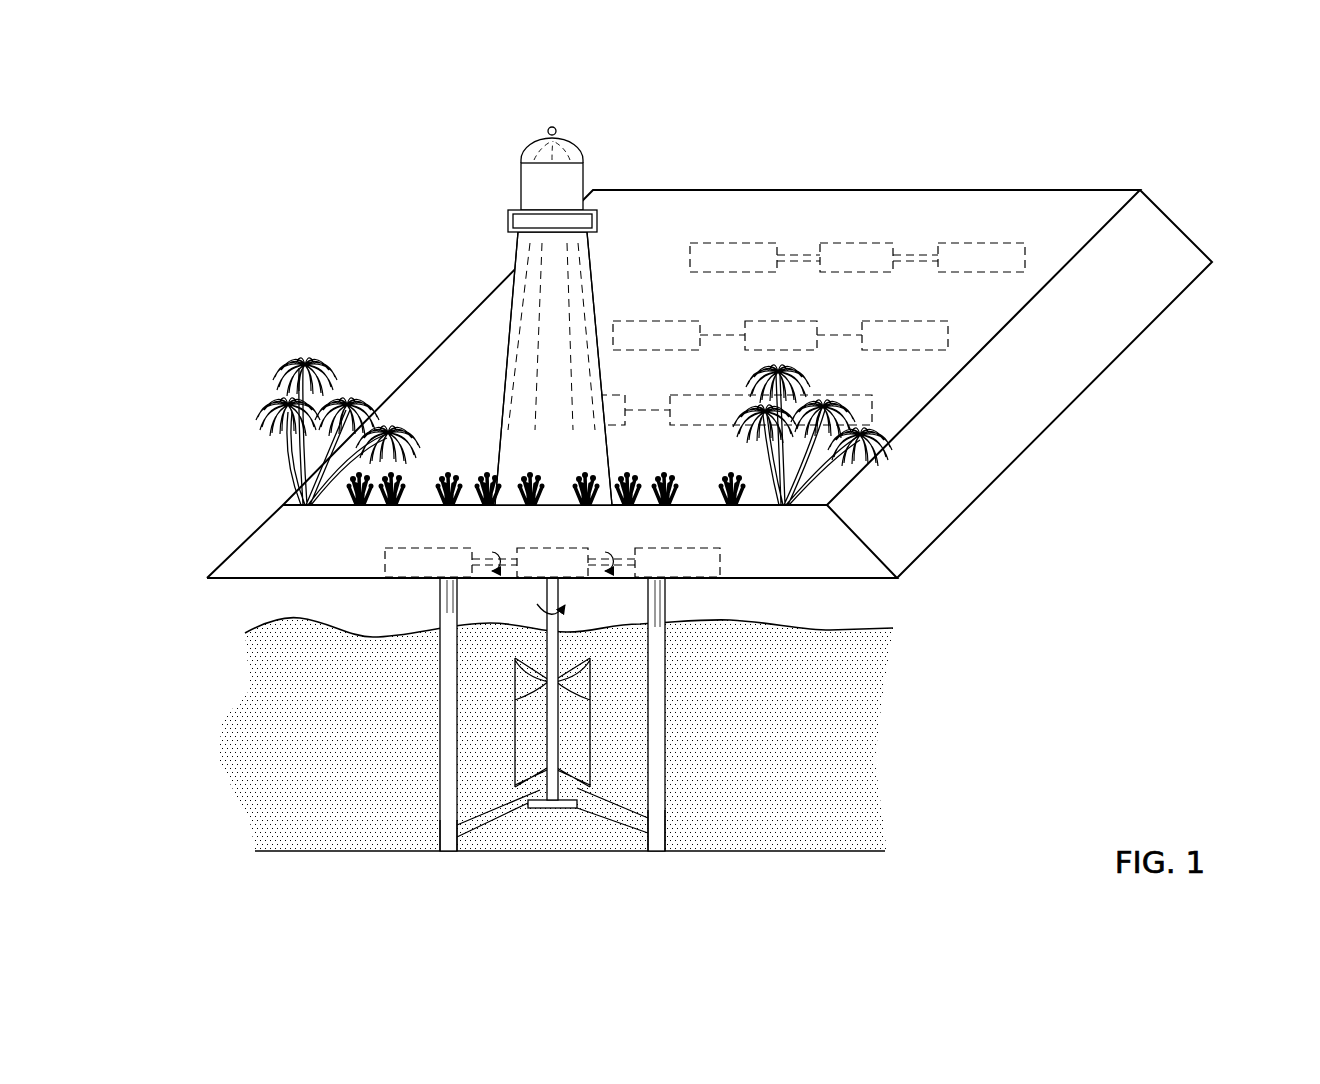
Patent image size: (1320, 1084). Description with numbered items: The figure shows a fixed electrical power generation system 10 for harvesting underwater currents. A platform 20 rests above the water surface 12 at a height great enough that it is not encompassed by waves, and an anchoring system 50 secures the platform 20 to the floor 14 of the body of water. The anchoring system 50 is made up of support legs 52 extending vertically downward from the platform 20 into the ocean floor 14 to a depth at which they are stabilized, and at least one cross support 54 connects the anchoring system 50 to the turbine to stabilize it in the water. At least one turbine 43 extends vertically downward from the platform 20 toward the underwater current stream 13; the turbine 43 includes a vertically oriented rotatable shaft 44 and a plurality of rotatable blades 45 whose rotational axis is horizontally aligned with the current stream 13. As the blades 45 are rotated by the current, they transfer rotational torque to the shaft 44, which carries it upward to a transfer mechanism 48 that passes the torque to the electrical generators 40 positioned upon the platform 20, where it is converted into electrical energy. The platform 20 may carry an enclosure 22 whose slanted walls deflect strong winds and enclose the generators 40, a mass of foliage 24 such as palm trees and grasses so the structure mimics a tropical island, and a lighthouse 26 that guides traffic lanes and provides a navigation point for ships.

The fixed electrical power generation system 10 is at (236, 199).
The water surface 12 is at (867, 632).
The underwater current stream 13 is at (293, 698).
The floor 14 is at (850, 851).
The platform 20 is at (966, 552).
The enclosure 22 is at (988, 488).
The foliage 24 is at (347, 417).
The lighthouse 26 is at (517, 253).
The electrical generator 40 is at (637, 320).
The turbine 43 is at (494, 663).
The rotatable shaft 44 is at (547, 592).
The rotatable blades 45 is at (515, 757).
The transfer mechanism 48 is at (553, 548).
The anchoring system 50 is at (672, 603).
The support legs 52 is at (438, 828).
The cross support 54 is at (603, 823).